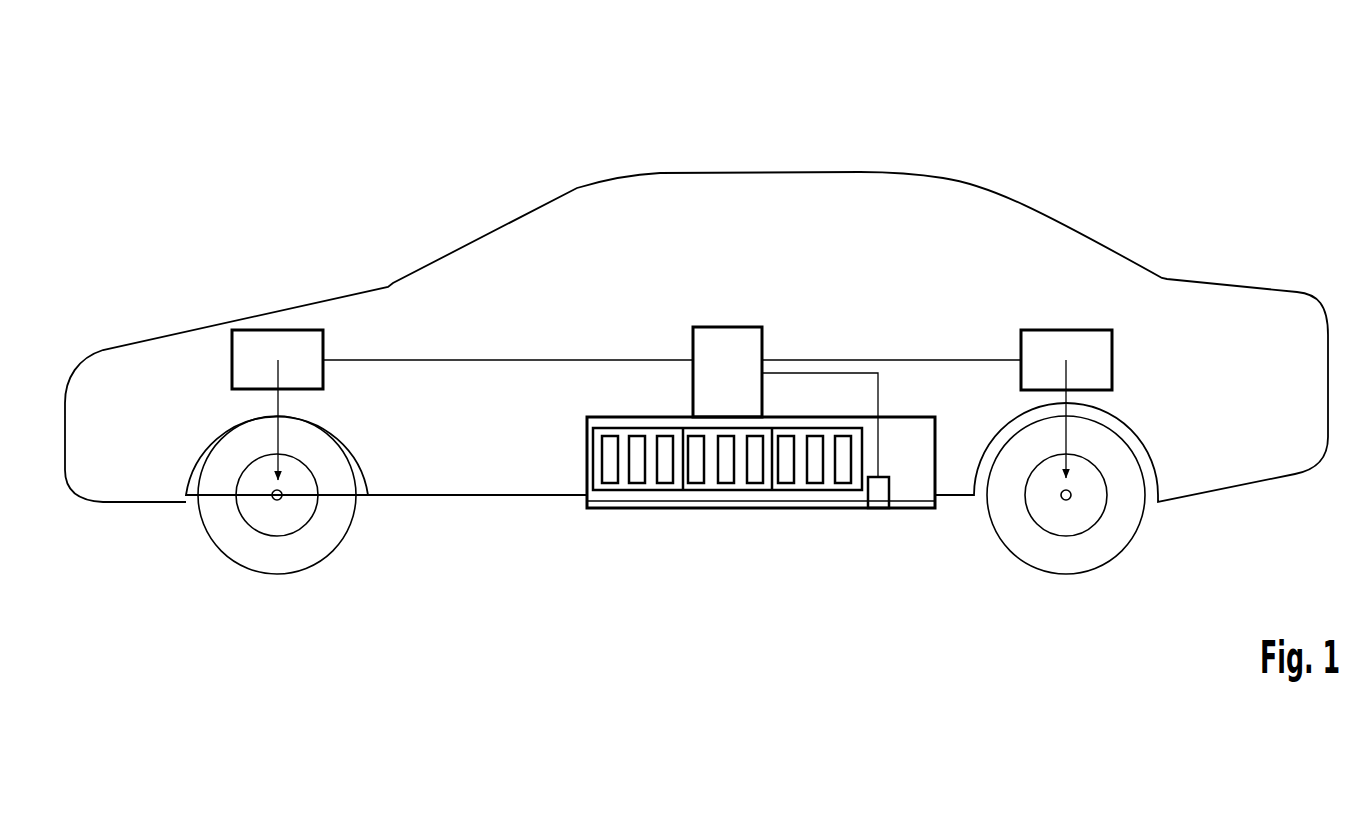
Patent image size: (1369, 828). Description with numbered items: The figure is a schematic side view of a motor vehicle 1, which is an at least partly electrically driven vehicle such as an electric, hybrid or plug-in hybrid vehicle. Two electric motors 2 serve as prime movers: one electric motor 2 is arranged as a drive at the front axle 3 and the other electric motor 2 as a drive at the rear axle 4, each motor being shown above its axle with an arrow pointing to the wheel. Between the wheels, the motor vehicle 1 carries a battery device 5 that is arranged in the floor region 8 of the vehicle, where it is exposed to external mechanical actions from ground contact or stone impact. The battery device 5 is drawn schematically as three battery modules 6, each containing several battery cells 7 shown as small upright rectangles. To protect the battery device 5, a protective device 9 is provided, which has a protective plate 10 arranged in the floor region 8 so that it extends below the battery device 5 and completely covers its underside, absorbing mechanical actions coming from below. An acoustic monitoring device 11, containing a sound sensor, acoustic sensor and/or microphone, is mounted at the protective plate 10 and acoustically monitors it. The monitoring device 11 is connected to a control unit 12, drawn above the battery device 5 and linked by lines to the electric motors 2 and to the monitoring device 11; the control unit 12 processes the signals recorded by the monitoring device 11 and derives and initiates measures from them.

The motor vehicle 1 is at (913, 130).
The electric motor 2 is at (258, 328).
The front axle 3 is at (277, 500).
The rear axle 4 is at (1067, 501).
The battery device 5 is at (600, 508).
The battery module 6 is at (726, 505).
The battery cell 7 is at (667, 478).
The floor region 8 is at (497, 522).
The protective device 9 is at (754, 541).
The protective plate 10 is at (703, 508).
The acoustic monitoring device 11 is at (880, 508).
The control unit 12 is at (725, 325).